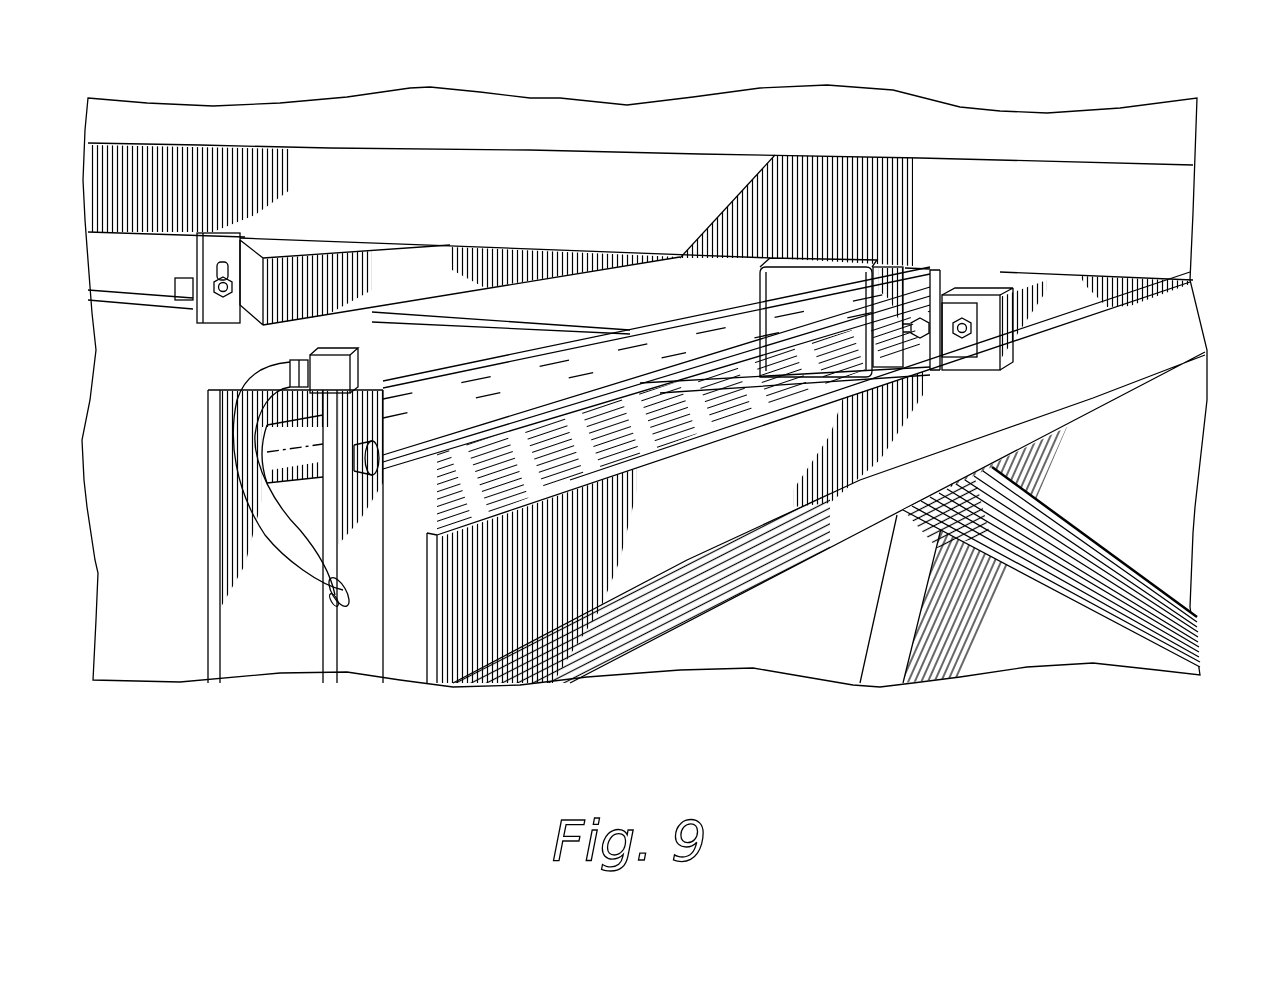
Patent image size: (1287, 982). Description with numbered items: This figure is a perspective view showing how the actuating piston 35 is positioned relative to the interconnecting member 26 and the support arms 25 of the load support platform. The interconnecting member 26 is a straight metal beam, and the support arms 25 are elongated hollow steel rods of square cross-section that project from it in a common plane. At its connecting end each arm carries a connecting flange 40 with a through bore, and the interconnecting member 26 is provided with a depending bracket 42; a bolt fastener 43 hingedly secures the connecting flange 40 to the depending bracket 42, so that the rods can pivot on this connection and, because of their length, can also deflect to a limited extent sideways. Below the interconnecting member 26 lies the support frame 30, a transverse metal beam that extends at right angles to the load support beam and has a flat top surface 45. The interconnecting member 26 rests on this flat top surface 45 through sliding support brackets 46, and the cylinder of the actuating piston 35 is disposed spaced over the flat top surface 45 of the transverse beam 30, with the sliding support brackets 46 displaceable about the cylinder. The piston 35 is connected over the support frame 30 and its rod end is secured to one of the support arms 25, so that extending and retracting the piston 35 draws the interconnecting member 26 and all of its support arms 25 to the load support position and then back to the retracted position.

The support arms 25 is at (415, 283).
The interconnecting member 26 is at (1150, 235).
The support frame 30 is at (807, 460).
The actuating pistons 35 is at (512, 375).
The connecting flange 40 is at (175, 278).
The depending bracket 42 is at (210, 315).
The bolt fastener 43 is at (223, 273).
The flat top surface 45 is at (670, 428).
The sliding support brackets 46 is at (885, 295).